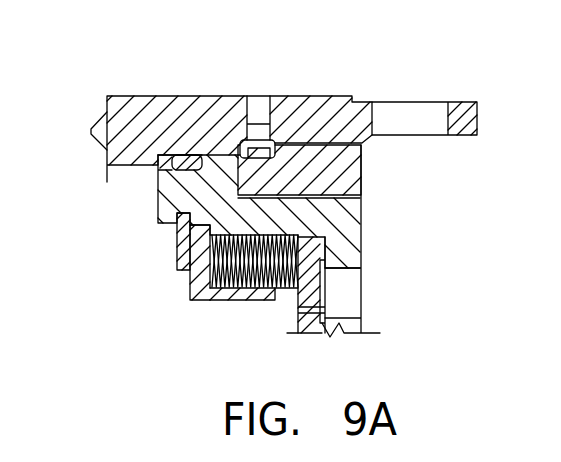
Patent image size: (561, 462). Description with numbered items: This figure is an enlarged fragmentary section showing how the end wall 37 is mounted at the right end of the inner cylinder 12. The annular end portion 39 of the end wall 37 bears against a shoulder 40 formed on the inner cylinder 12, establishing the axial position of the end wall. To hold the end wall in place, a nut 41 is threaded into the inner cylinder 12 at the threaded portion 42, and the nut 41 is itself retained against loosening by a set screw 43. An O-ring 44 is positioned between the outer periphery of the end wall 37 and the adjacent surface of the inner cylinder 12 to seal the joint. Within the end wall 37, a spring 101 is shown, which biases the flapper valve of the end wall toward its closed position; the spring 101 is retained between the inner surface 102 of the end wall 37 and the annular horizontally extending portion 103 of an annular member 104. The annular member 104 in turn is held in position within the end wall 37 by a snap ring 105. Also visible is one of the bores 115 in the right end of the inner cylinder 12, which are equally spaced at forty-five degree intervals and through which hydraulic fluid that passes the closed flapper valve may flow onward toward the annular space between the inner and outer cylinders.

The inner cylinder 12 is at (107, 149).
The end wall 37 is at (362, 214).
The annular end portion 39 is at (158, 166).
The shoulder 40 is at (175, 152).
The nut 41 is at (363, 165).
The threaded portion 42 is at (307, 142).
The set screw 43 is at (256, 97).
The O-ring 44 is at (190, 152).
The spring 101 is at (287, 292).
The inner surface 102 is at (326, 247).
The annular horizontally extending portion 103 is at (222, 300).
The annular member 104 is at (188, 290).
The snap ring 105 is at (172, 262).
The bores 115 is at (392, 108).